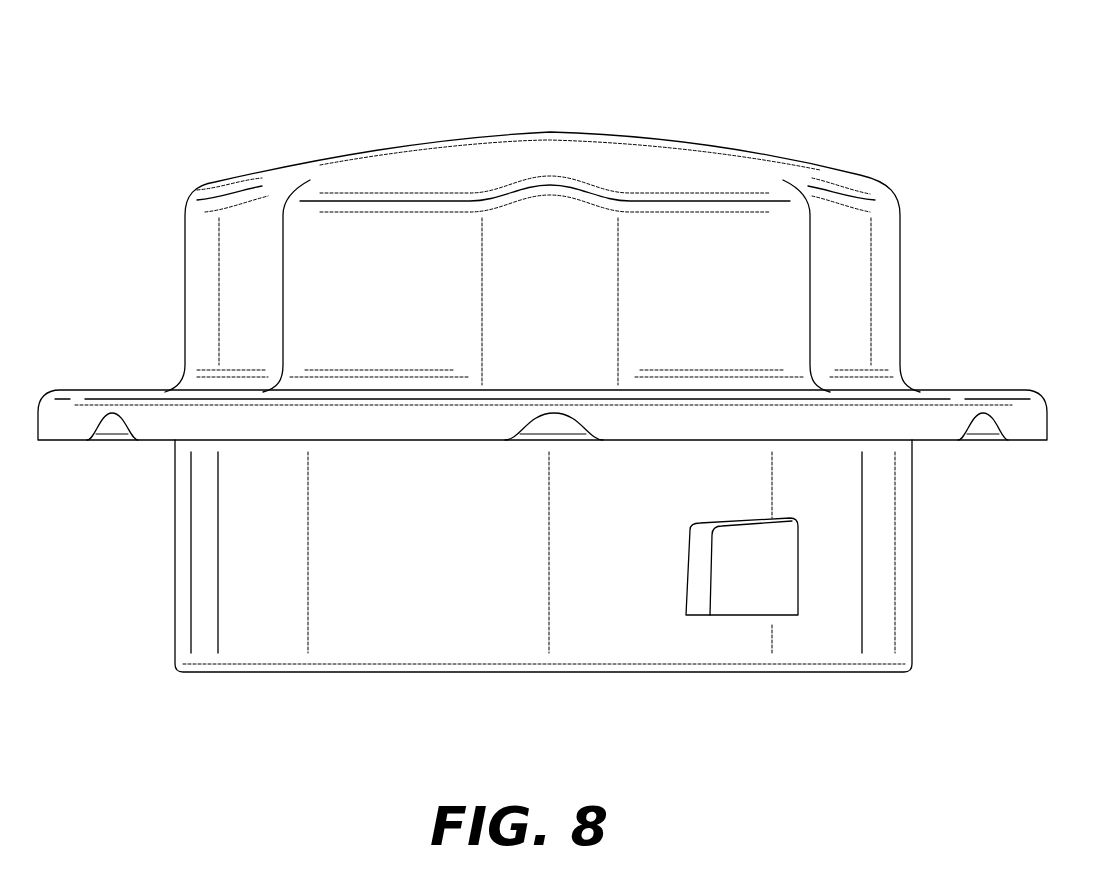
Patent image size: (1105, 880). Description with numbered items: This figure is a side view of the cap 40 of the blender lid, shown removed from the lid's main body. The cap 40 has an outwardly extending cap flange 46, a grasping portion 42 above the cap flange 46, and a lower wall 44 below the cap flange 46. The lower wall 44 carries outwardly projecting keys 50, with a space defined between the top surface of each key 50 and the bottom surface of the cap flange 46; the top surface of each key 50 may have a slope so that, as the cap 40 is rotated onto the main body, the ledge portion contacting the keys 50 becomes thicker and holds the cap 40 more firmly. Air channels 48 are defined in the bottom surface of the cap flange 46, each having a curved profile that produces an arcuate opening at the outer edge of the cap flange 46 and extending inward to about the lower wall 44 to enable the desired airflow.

The cap 40 is at (938, 89).
The grasping portion 42 is at (681, 165).
The lower wall 44 is at (503, 640).
The cap flange 46 is at (947, 417).
The air channel 48 is at (110, 427).
The key 50 is at (750, 585).